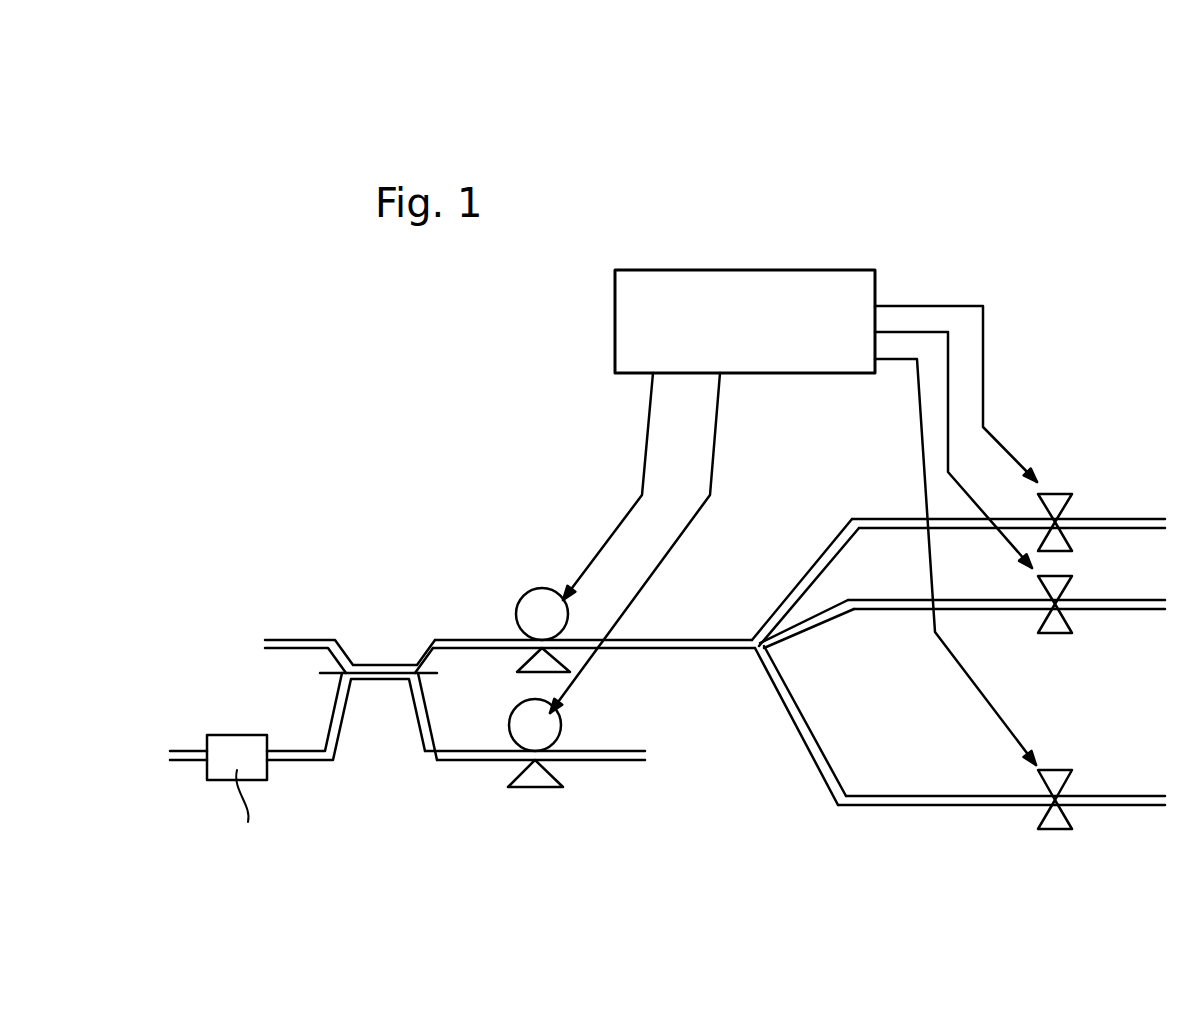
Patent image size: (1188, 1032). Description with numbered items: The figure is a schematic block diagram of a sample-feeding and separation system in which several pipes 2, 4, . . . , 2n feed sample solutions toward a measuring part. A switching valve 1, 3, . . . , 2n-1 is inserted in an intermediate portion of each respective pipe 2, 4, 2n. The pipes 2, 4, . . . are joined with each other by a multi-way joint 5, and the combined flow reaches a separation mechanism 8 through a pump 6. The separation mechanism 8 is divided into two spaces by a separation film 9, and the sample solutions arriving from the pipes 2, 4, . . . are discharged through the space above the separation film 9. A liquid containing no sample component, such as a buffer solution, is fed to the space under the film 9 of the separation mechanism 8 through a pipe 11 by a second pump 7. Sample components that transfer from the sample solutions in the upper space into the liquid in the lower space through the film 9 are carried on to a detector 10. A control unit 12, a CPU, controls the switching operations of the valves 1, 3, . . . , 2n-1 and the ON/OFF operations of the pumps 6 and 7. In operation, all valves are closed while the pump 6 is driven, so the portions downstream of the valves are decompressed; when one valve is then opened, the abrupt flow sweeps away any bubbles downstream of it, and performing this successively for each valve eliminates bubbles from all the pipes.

The switching valve 1 is at (1058, 492).
The pipe 2 is at (1138, 518).
The switching valve 3 is at (1070, 626).
The pipe 4 is at (1132, 600).
The switching valve 2n-1 is at (1062, 829).
The pipe 2n is at (1137, 808).
The multi-way joint 5 is at (750, 652).
The pump 6 is at (532, 592).
The pump 7 is at (561, 728).
The separation mechanism 8 is at (378, 665).
The separation film 9 is at (435, 672).
The detector 10 is at (220, 735).
The pipe 11 is at (605, 768).
The control unit 12 is at (810, 268).